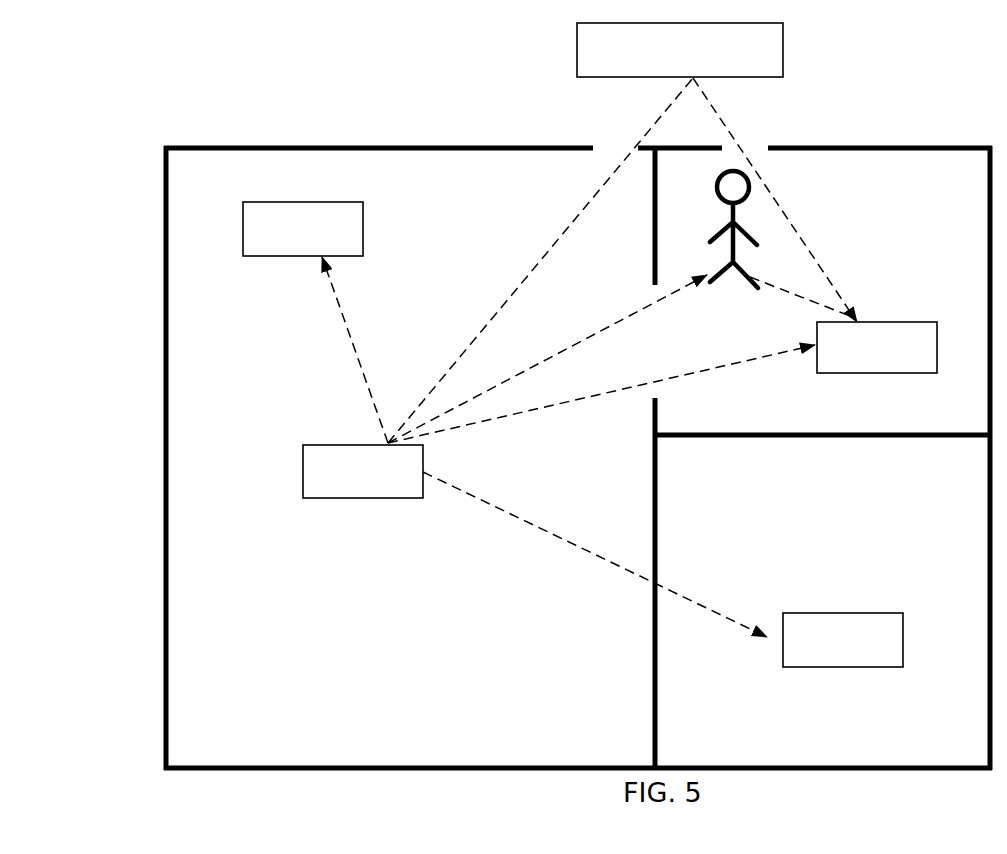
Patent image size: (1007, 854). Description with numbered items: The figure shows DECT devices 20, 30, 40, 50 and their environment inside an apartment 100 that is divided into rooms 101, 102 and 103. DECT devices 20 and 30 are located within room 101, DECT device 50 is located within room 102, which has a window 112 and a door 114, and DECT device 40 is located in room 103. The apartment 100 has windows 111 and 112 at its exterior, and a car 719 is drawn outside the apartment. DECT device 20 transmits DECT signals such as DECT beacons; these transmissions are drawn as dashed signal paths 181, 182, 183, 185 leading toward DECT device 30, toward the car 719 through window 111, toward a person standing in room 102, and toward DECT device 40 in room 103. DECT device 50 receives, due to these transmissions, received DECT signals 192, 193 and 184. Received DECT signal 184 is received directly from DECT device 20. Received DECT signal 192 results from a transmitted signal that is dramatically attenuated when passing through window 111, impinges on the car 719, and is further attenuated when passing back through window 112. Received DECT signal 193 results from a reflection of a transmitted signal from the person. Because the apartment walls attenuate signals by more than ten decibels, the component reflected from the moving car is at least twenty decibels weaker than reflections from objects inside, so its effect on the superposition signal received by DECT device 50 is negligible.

The apartment 100 is at (289, 145).
The room 101 is at (370, 572).
The room 102 is at (962, 204).
The room 103 is at (910, 497).
The window 111 is at (613, 147).
The window 112 is at (757, 147).
The door 114 is at (682, 357).
The DECT device 20 is at (349, 483).
The DECT device 30 is at (289, 241).
The DECT device 40 is at (829, 652).
The DECT device 50 is at (863, 359).
The car 719 is at (724, 61).
The communication link to device 30 181 is at (357, 345).
The communication link to car 182 is at (460, 352).
The communication link to person 183 is at (503, 385).
The received DECT signal 184 is at (555, 403).
The communication link to device 40 185 is at (517, 508).
The received DECT signal 192 is at (793, 220).
The received DECT signal 193 is at (783, 287).